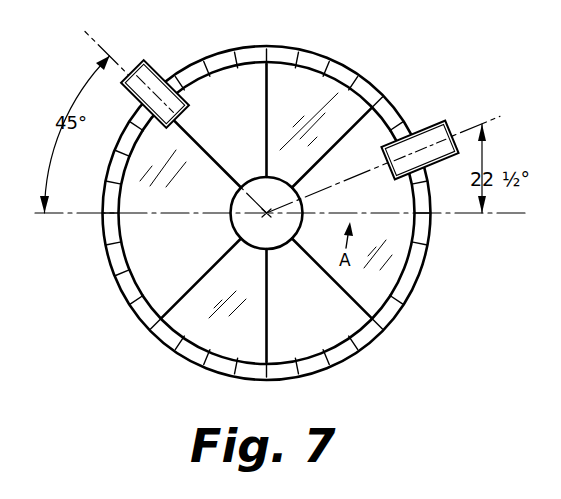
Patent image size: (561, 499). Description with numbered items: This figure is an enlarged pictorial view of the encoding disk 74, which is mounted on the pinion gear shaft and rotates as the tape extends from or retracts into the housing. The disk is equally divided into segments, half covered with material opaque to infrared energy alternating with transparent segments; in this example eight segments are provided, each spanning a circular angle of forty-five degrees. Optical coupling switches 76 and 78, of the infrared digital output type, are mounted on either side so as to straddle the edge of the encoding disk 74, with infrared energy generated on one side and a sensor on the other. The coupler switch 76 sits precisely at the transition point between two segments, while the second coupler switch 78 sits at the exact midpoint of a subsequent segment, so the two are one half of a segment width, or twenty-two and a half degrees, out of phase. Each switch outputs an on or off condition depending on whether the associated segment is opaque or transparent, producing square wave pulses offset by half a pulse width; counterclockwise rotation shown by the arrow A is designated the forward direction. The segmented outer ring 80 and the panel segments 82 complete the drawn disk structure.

The encoding disk 74 is at (342, 92).
The optical coupling switch 76 is at (144, 62).
The optical coupling switch 78 is at (446, 122).
The segmented ring 80 is at (229, 62).
The panel segments 82 is at (426, 262).